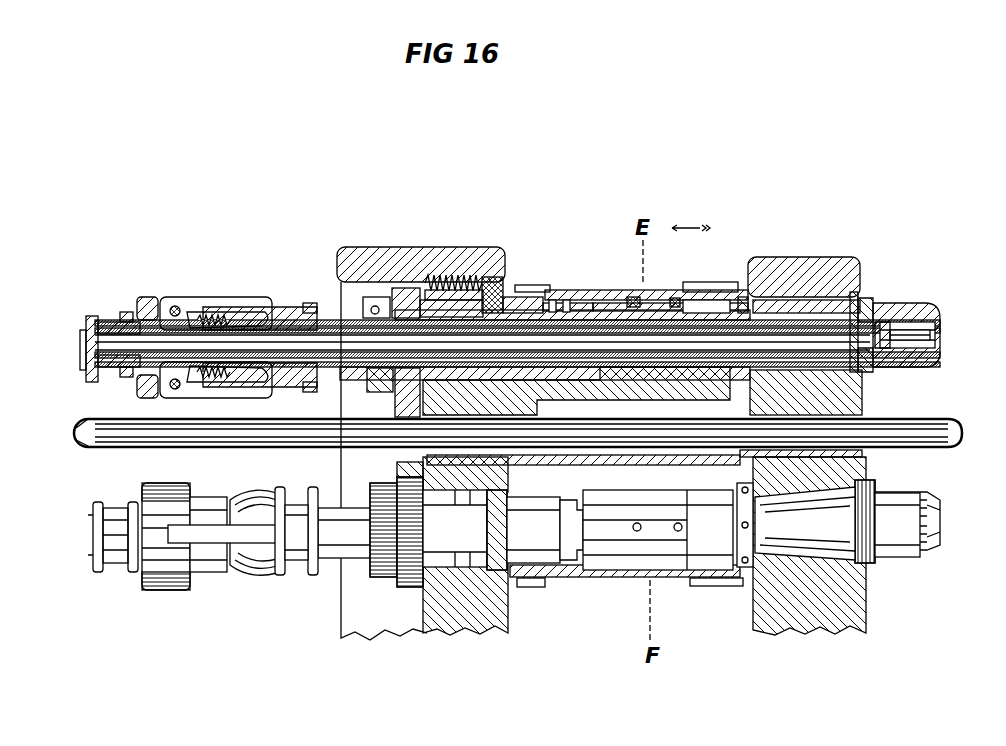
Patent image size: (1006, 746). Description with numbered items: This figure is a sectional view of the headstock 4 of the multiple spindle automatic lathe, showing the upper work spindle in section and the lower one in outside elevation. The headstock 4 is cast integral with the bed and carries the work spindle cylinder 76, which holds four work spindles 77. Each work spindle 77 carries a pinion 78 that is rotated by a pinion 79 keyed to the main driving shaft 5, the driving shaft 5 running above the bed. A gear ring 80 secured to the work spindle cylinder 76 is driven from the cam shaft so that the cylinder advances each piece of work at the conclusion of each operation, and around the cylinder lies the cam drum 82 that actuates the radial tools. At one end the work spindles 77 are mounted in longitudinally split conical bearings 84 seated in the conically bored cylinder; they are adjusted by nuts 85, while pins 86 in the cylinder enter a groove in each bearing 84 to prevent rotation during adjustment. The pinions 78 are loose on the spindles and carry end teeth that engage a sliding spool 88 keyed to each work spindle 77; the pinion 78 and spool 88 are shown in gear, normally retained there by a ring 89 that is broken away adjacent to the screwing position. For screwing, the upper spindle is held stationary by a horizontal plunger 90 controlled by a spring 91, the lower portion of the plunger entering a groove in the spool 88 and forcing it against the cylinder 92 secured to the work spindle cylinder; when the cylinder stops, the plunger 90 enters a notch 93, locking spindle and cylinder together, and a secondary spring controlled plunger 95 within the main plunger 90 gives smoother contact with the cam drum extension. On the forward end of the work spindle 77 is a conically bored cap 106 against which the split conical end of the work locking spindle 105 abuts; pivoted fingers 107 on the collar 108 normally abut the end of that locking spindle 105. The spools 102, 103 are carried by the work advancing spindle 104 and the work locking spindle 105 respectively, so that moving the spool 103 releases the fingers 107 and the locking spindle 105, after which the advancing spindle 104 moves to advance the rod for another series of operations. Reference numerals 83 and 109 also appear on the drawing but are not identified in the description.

The headstock 4 is at (365, 260).
The driving shaft 5 is at (960, 428).
The work spindle cylinder 76 is at (598, 290).
The work spindle 77 is at (920, 308).
The pinion 78 is at (397, 390).
The pinion 79 is at (397, 465).
The gear ring 80 is at (707, 283).
The cam drum 82 is at (585, 290).
The cover plate 83 is at (570, 283).
The conical bearing 84 is at (873, 305).
The nut 85 is at (745, 300).
The pin 86 is at (865, 297).
The sliding spool 88 is at (445, 600).
The ring 89 is at (505, 580).
The horizontal plunger 90 is at (488, 280).
The spring 91 is at (440, 280).
The cylinder 92 is at (610, 300).
The notch 93 is at (512, 300).
The secondary spring controlled plunger 95 is at (510, 300).
The spool 102 is at (100, 320).
The spool 103 is at (280, 310).
The work advancing spindle 104 is at (925, 325).
The work locking spindle 105 is at (660, 310).
The cap 106 is at (900, 305).
The pivoted fingers 107 is at (203, 300).
The collar 108 is at (140, 298).
The flange ring 109 is at (283, 578).